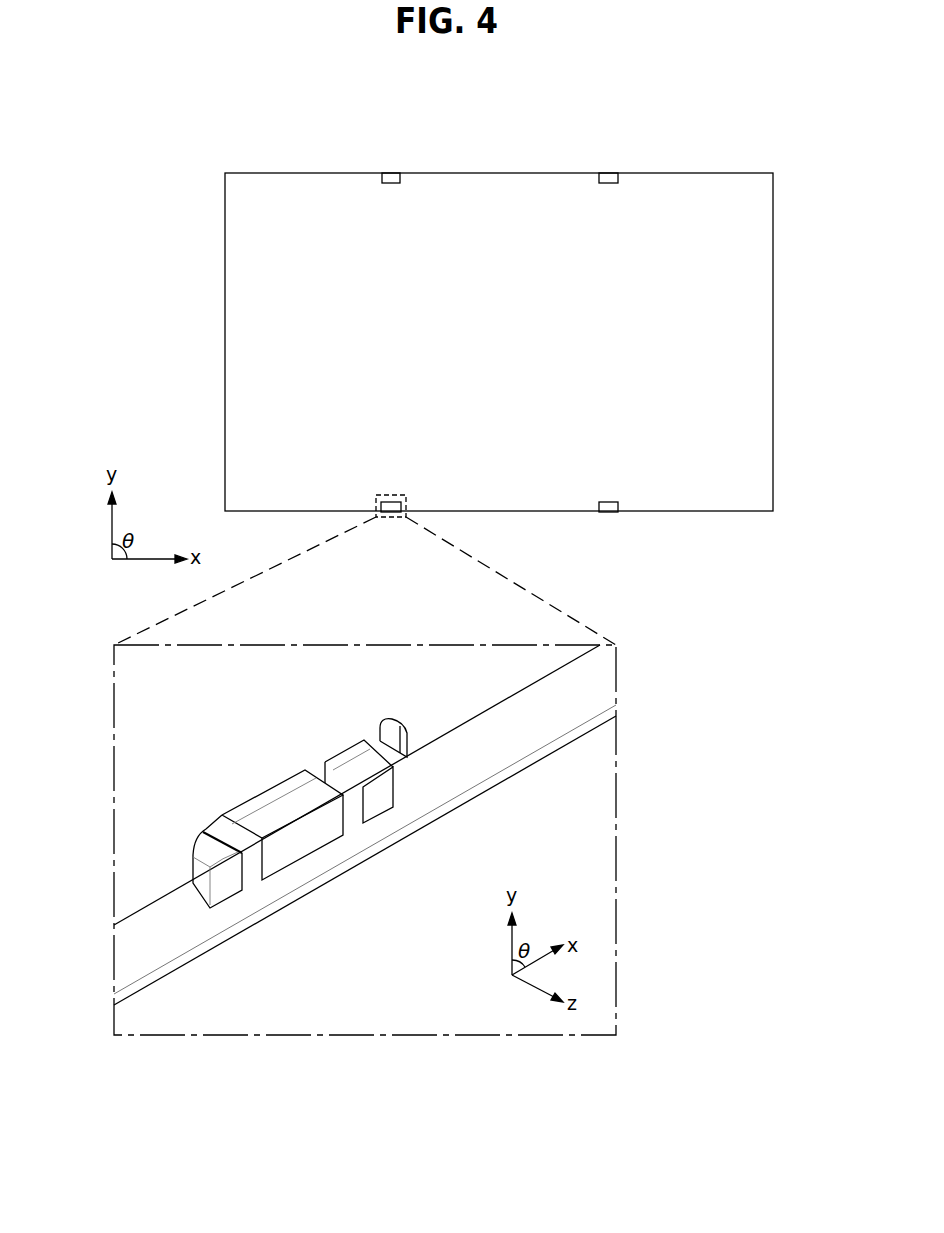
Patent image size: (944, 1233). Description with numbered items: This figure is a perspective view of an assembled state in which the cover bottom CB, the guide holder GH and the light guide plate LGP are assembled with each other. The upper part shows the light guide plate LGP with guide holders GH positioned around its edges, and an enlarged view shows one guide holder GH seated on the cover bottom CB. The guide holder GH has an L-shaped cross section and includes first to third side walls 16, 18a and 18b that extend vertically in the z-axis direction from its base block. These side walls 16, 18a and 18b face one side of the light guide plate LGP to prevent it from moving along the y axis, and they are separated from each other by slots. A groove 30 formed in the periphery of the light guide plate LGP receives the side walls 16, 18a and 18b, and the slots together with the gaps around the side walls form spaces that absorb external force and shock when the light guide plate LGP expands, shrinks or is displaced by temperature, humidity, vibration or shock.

The light guide plate LGP is at (765, 266).
The guide holder GH is at (390, 173).
The cover bottom CB is at (493, 762).
The first side wall 16 is at (287, 858).
The second side wall 18a is at (225, 888).
The third side wall 18b is at (378, 802).
The groove 30 is at (422, 748).